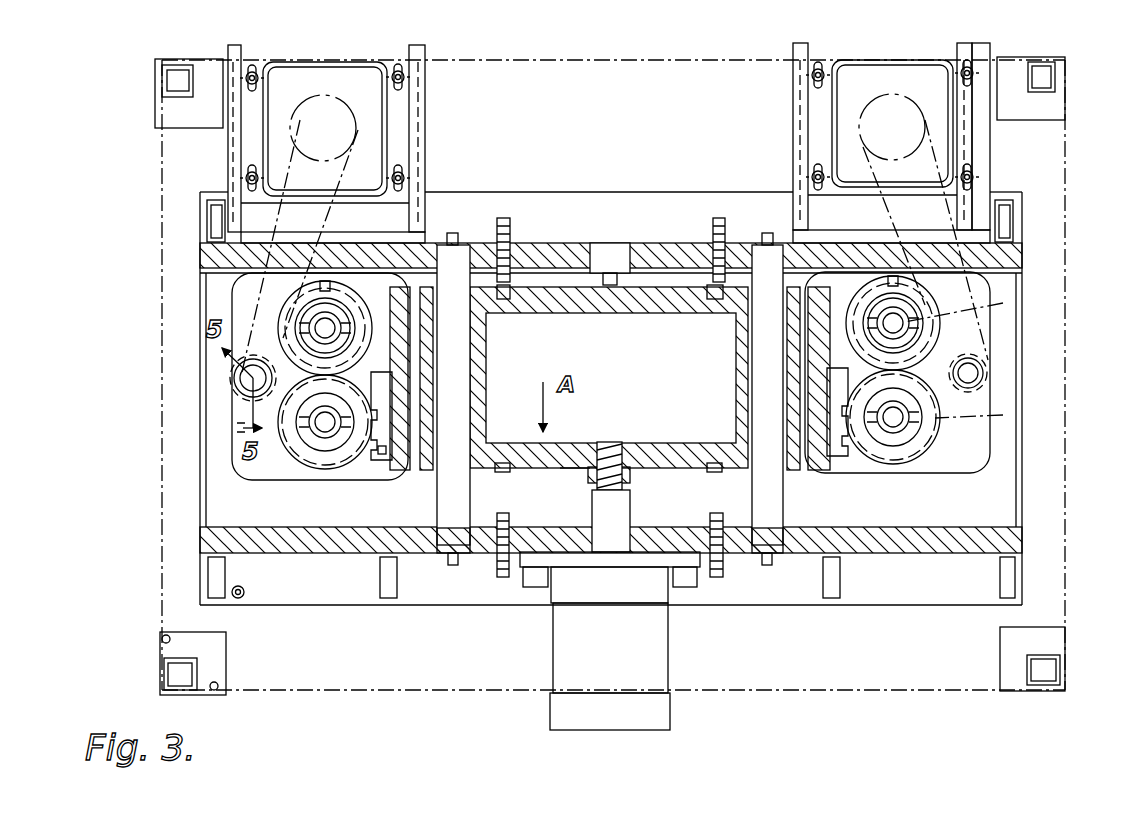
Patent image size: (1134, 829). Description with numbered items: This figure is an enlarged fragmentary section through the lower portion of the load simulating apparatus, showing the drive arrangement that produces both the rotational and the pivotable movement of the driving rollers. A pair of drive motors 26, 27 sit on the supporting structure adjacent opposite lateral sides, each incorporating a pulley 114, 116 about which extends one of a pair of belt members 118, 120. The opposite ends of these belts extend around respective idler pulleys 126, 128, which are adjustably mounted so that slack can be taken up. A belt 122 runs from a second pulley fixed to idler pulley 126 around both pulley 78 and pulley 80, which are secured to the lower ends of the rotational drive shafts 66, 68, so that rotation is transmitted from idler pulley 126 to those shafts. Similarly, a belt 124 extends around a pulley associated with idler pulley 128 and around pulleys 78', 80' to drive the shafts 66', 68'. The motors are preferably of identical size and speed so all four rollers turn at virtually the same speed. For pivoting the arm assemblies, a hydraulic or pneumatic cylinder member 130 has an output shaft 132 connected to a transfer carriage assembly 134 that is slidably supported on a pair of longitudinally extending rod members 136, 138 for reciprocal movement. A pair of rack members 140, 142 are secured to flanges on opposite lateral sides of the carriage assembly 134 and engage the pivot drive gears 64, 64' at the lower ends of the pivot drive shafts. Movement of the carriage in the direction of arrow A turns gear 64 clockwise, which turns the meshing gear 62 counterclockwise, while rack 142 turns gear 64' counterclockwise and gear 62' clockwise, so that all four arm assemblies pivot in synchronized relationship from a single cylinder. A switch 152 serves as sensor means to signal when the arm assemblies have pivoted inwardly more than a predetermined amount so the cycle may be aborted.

The drive motor 26 is at (318, 85).
The drive motor 27 is at (905, 78).
The pulley 114 is at (356, 132).
The pulley 116 is at (856, 114).
The belt member 118 is at (215, 216).
The pulley member 78 is at (327, 290).
The switch 152 is at (608, 250).
The rotational drive shaft 66' is at (875, 282).
The belt member 120 is at (1003, 303).
The idler pulley 128 is at (1003, 372).
The belt 124 is at (1003, 415).
The idler pulley 126 is at (255, 358).
The belt 122 is at (245, 413).
The rotational drive shaft 66 is at (374, 324).
The gear member 62 is at (414, 378).
The gear member 62' is at (806, 378).
The pulley member 78' is at (911, 361).
The pulley member 80 is at (295, 438).
The rotational drive shaft 68 is at (303, 453).
The gear member 64 is at (325, 447).
The rack member 140 is at (377, 458).
The rod member 136 is at (475, 504).
The transfer carriage assembly 134 is at (548, 470).
The output shaft 132 is at (622, 500).
The rod member 138 is at (787, 494).
The rack member 142 is at (845, 455).
The gear member 64' is at (893, 447).
The pulley member 80' is at (910, 444).
The rotational drive shaft 68' is at (934, 443).
The cylinder member 130 is at (630, 652).